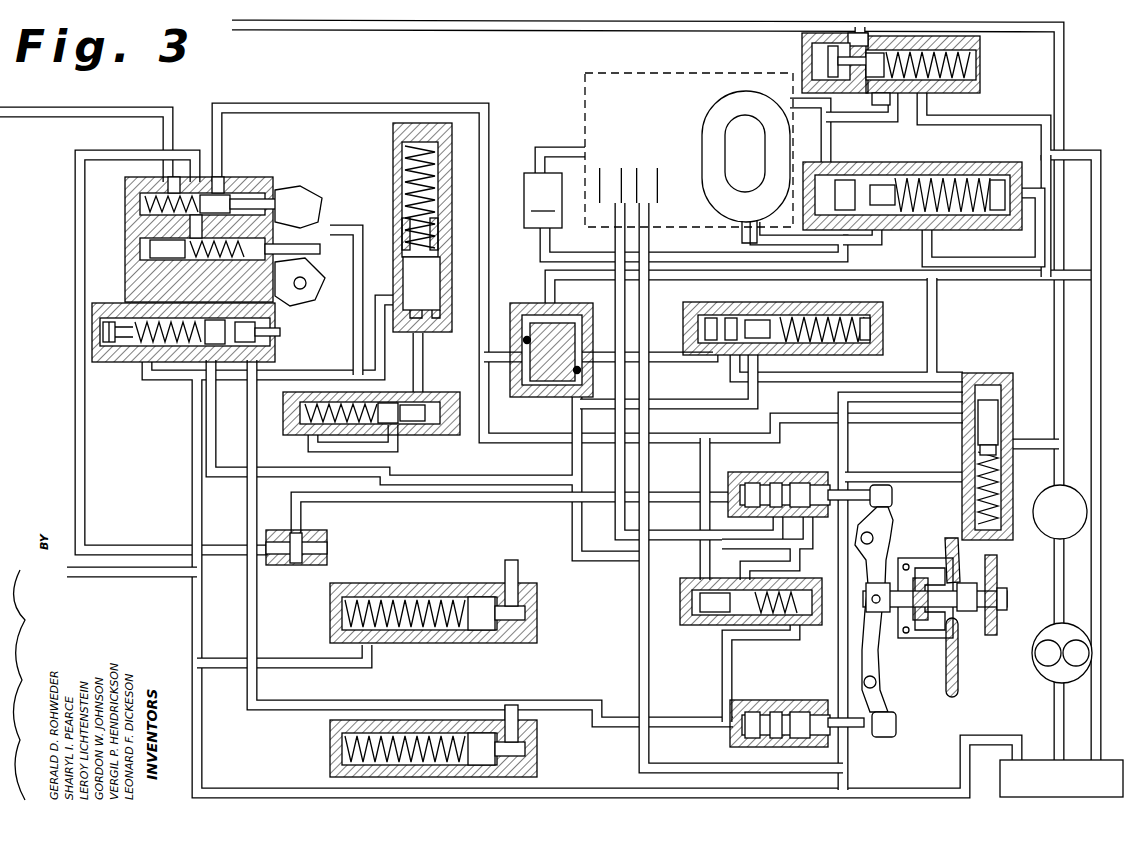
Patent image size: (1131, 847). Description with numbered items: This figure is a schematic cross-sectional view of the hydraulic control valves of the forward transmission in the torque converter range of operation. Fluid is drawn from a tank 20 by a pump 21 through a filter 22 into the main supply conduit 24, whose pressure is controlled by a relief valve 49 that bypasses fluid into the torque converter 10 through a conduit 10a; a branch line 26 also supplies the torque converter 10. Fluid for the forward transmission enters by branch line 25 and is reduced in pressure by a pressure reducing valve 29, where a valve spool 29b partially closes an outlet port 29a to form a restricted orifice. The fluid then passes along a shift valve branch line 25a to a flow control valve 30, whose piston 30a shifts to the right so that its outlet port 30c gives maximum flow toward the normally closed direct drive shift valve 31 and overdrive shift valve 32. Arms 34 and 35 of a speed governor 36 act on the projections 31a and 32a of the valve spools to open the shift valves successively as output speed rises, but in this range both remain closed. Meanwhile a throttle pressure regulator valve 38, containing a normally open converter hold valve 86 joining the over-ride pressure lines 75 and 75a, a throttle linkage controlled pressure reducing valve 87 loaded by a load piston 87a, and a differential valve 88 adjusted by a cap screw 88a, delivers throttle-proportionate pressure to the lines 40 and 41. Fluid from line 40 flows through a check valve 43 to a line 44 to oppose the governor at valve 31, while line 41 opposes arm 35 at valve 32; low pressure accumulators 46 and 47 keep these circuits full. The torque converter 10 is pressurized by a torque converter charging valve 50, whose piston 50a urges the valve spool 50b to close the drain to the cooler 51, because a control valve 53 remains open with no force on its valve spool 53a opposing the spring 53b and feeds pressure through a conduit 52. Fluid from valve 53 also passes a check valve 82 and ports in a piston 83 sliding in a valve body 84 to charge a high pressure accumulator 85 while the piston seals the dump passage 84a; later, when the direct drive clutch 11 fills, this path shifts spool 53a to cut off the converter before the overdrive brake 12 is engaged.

The torque converter 10 is at (718, 105).
The conduit 10a is at (792, 128).
The direct drive clutch 11 is at (610, 170).
The overdrive brake 12 is at (652, 170).
The tank 20 is at (1048, 760).
The pump 21 is at (1093, 642).
The filter 22 is at (1088, 506).
The main supply conduit 24 is at (375, 31).
The branch line 25 is at (690, 443).
The shift valve branch line 25a is at (699, 563).
The branch line 26 is at (815, 34).
The pressure reducing valve 29 is at (975, 375).
The outlet port 29a is at (967, 428).
The valve spool 29b is at (967, 466).
The flow control valve 30 is at (692, 622).
The piston 30a is at (722, 628).
The outlet port 30c is at (722, 575).
The direct drive shift valve 31 is at (745, 476).
The projection 31a is at (836, 488).
The overdrive shift valve 32 is at (760, 701).
The projection 32a is at (853, 730).
The arm 34 is at (882, 548).
The arm 35 is at (862, 670).
The speed governor 36 is at (925, 640).
The throttle pressure regulator valve 38 is at (278, 182).
The line 40 is at (206, 421).
The line 41 is at (250, 516).
The check valve 43 is at (300, 566).
The line 44 is at (513, 500).
The low pressure accumulator 46 is at (540, 597).
The low pressure accumulator 47 is at (540, 750).
The relief valve 49 is at (982, 72).
The torque converter charging valve 50 is at (930, 165).
The piston 50a is at (985, 165).
The valve spool 50b is at (860, 183).
The cooler 51 is at (543, 200).
The conduit 52 is at (938, 336).
The control valve 53 is at (765, 303).
The valve spool 53a is at (742, 315).
The spring 53b is at (883, 315).
The over-ride pressure line 75 is at (82, 112).
The over-ride pressure line 75a is at (76, 232).
The check valve 82 is at (536, 305).
The piston 83 is at (398, 393).
The valve body 84 is at (455, 433).
The dump passage 84a is at (458, 474).
The high pressure accumulator 85 is at (393, 140).
The converter hold valve 86 is at (262, 190).
The pressure reducing valve 87 is at (150, 256).
The load piston 87a is at (316, 252).
The differential valve 88 is at (268, 338).
The cap screw 88a is at (103, 331).